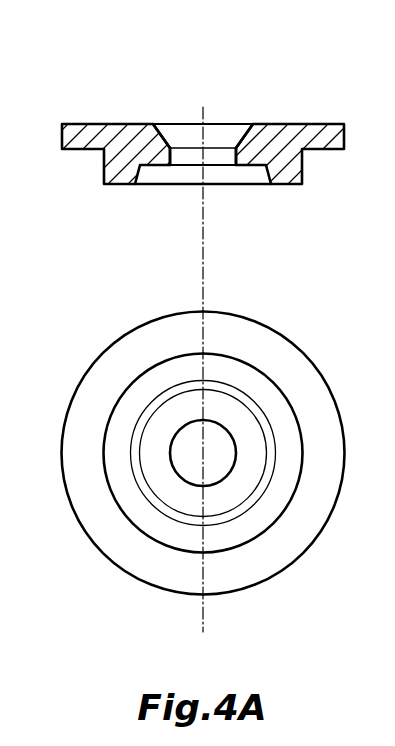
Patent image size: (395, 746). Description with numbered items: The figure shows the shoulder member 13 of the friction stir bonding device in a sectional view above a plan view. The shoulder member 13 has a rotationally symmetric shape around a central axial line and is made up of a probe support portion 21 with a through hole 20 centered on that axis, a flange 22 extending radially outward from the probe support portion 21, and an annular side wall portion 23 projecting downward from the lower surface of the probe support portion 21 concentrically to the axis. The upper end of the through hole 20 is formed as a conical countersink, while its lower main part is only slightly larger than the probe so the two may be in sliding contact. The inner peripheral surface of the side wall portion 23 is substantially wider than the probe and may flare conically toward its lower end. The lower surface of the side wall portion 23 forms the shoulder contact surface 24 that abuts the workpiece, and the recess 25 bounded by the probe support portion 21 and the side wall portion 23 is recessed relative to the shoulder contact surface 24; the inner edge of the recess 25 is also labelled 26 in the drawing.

The shoulder member 13 is at (64, 110).
The through hole 20 is at (235, 154).
The probe support portion 21 is at (238, 160).
The flange 22 is at (318, 128).
The annular side wall portion 23 is at (119, 168).
The shoulder contact surface 24 is at (116, 185).
The recess 25 is at (142, 178).
The annular shoulder 26 is at (157, 168).